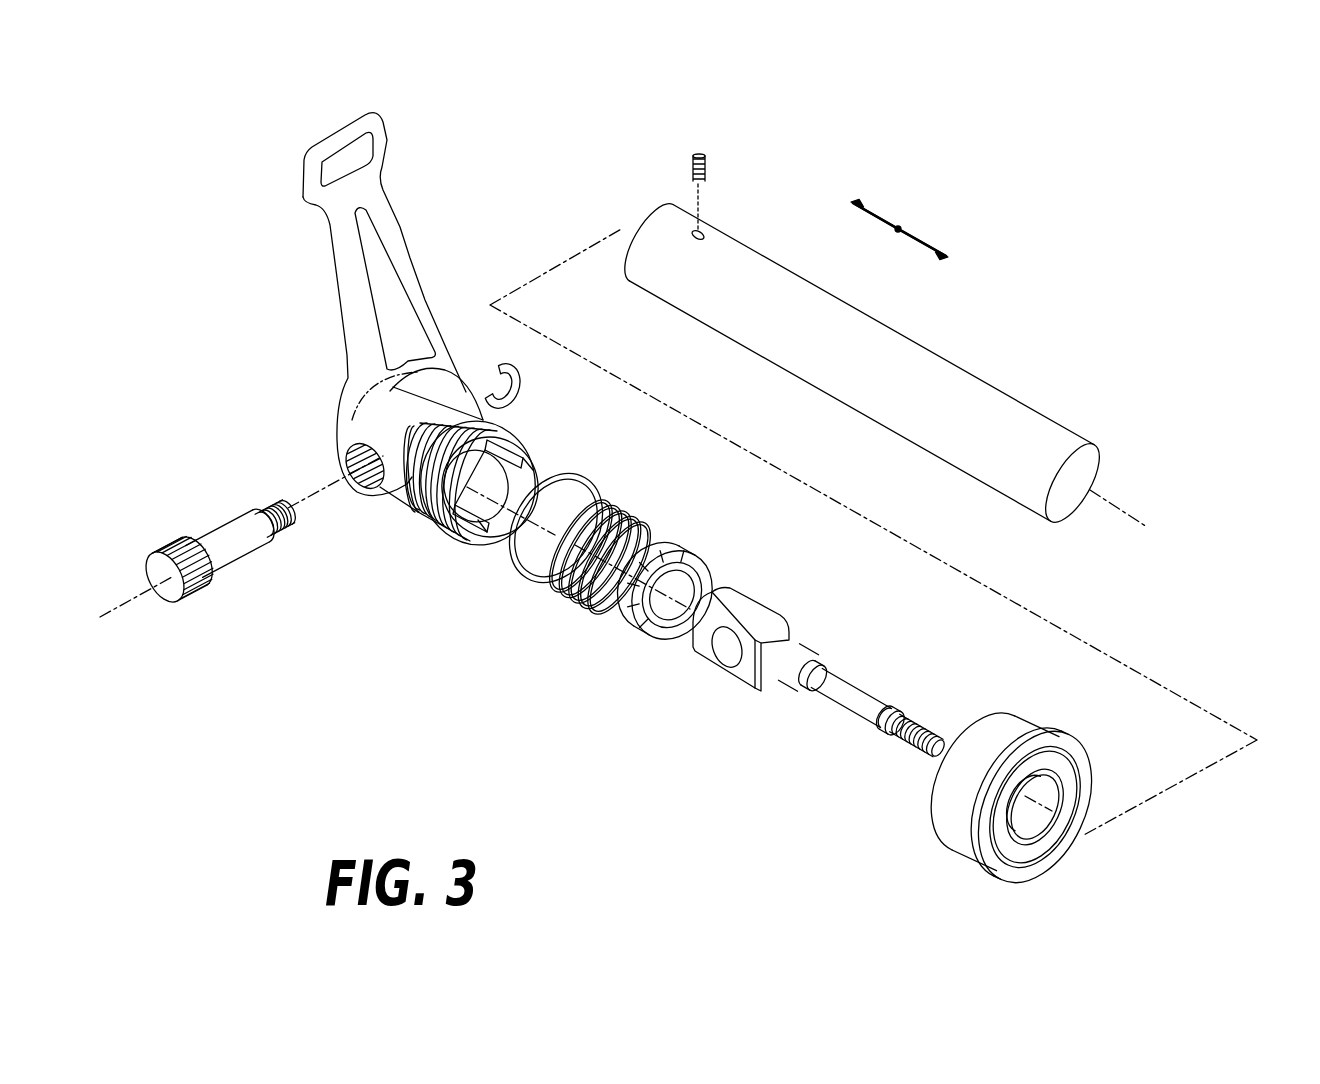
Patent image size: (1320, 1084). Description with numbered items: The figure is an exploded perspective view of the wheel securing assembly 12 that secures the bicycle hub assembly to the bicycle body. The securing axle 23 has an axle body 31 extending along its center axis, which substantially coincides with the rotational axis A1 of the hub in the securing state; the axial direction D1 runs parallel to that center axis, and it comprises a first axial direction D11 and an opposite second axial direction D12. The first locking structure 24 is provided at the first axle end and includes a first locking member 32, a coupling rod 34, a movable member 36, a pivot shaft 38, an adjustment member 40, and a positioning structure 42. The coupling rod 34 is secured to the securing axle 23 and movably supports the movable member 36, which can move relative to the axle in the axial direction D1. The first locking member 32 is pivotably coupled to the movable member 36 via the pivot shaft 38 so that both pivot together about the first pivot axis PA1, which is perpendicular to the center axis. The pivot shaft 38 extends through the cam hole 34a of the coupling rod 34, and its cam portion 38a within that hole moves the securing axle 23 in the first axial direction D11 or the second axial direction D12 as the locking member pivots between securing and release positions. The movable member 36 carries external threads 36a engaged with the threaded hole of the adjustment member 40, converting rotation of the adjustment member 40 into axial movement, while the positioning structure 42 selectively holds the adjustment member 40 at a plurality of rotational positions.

The wheel securing assembly 12 is at (1260, 176).
The securing axle 23 is at (1088, 436).
The first locking structure 24 is at (298, 318).
The axle body 31 is at (972, 385).
The first locking member 32 is at (342, 347).
The coupling rod 34 is at (827, 716).
The cam hole 34a is at (732, 652).
The movable member 36 is at (381, 510).
The external threads 36a is at (434, 533).
The pivot shaft 38 is at (178, 527).
The cam portion 38a is at (229, 554).
The adjustment member 40 is at (946, 841).
The positioning structure 42 is at (574, 622).
The first pivot axis PA1 is at (130, 592).
The rotational axis A1 is at (1130, 512).
The axial direction D1 is at (990, 152).
The first axial direction D11 is at (878, 215).
The second axial direction D12 is at (922, 235).